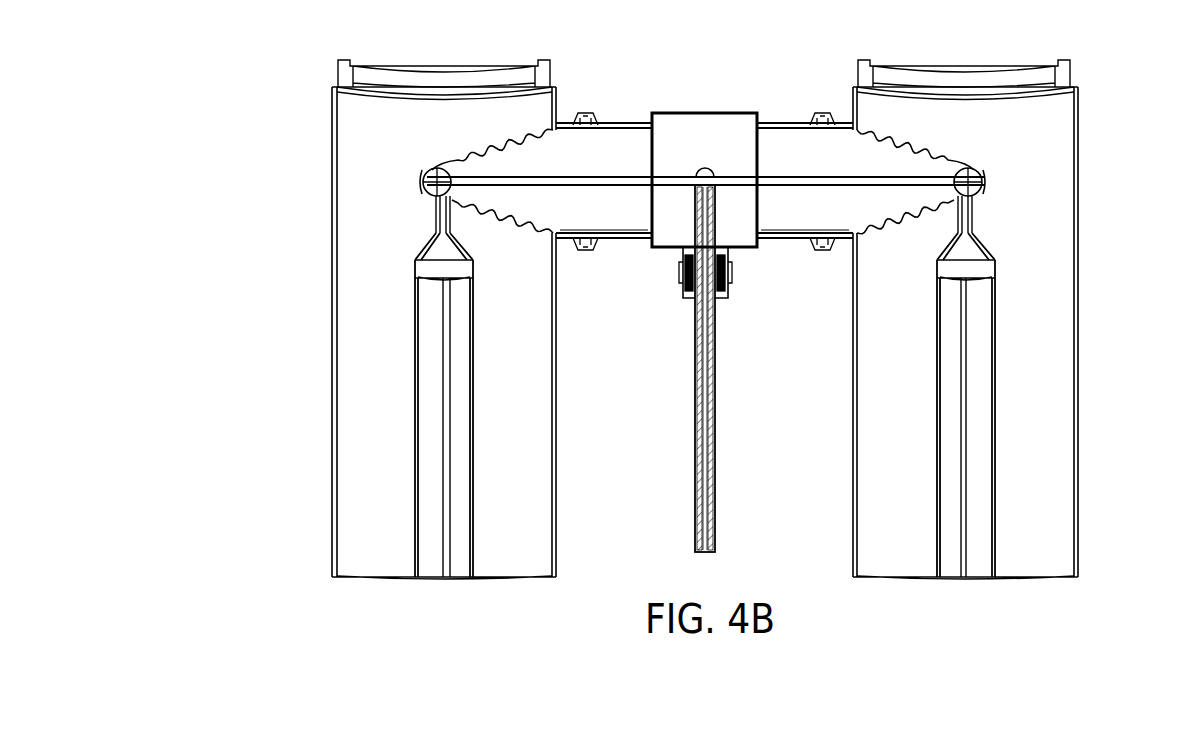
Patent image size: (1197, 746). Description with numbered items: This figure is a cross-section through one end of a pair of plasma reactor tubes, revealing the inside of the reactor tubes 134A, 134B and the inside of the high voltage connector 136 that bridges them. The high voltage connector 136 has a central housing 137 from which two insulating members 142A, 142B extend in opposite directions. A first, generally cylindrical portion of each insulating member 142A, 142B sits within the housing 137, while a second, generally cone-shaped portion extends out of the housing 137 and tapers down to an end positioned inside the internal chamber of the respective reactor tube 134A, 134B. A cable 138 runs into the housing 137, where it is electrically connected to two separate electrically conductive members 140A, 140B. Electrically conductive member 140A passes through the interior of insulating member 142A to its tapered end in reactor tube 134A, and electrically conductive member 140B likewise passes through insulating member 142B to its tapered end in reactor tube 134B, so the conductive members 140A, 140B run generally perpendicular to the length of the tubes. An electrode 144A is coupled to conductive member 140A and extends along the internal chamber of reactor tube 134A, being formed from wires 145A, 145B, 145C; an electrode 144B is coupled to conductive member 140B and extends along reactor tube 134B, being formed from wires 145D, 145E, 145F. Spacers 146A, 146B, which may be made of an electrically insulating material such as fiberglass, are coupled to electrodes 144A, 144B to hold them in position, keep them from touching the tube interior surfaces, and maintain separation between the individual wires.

The high voltage connector 136 is at (706, 129).
The housing 137 is at (778, 125).
The cable 138 is at (721, 420).
The reactor tube 134A is at (331, 136).
The reactor tube 134B is at (1064, 121).
The electrically conductive member 140A is at (548, 186).
The electrically conductive member 140B is at (820, 186).
The insulating member 142A is at (620, 213).
The insulating member 142B is at (780, 218).
The electrode 144A is at (402, 233).
The electrode 144B is at (1000, 236).
The spacer 146A is at (424, 268).
The spacer 146B is at (988, 268).
The wire 145A is at (398, 454).
The wire 145B is at (443, 578).
The wire 145C is at (473, 578).
The wire 145D is at (935, 564).
The wire 145E is at (962, 578).
The wire 145F is at (995, 566).